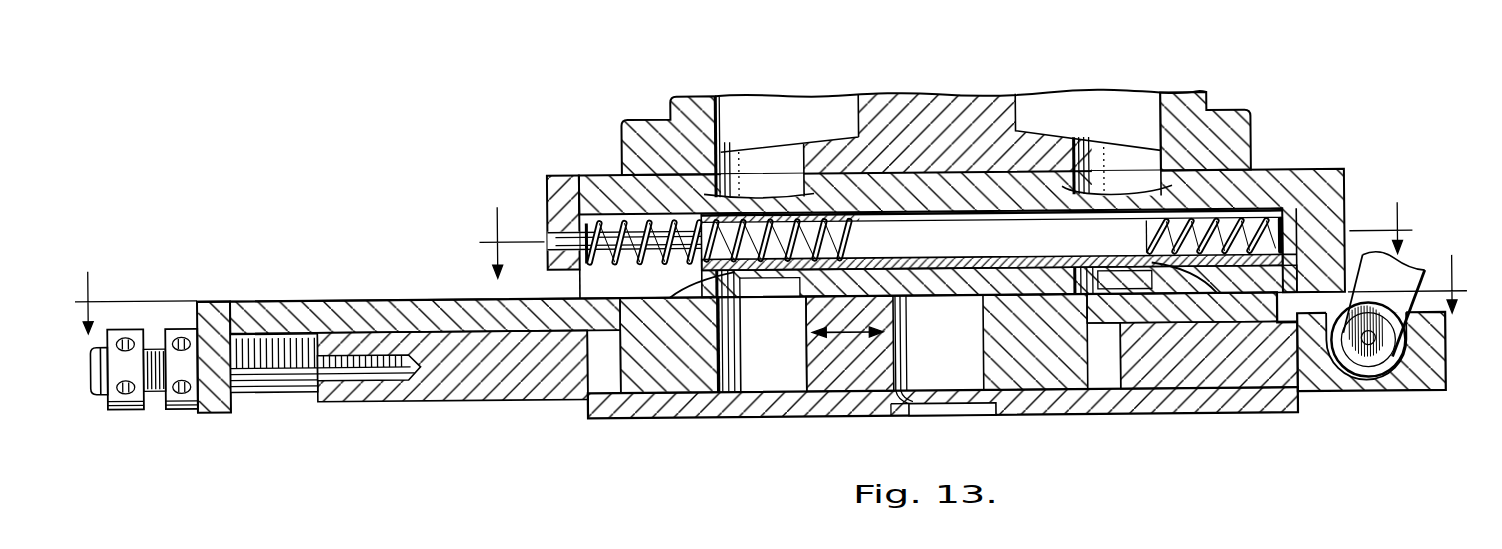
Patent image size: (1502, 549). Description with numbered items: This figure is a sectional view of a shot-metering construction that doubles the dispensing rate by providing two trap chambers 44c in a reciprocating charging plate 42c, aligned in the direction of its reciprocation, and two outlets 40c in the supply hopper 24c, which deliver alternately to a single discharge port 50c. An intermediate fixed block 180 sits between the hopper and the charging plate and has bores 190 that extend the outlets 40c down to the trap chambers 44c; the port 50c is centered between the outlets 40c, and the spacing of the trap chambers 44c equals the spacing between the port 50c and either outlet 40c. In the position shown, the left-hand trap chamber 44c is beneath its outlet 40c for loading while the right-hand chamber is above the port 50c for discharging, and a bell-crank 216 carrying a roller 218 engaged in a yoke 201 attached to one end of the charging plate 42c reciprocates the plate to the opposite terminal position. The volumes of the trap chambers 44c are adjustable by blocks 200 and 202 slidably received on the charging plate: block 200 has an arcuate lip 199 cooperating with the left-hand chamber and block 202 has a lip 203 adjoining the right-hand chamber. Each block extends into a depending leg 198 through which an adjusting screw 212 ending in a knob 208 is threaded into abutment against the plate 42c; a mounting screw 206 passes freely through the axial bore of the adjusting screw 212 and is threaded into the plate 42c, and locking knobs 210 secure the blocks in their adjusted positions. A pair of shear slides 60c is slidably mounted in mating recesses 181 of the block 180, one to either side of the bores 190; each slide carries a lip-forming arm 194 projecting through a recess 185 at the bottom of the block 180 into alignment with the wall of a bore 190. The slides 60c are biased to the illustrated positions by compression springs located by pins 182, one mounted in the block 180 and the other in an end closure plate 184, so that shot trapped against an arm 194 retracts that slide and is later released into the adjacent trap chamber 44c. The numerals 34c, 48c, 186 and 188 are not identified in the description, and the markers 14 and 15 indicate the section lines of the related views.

The supply hopper 24c is at (672, 116).
The hopper outlet 40c is at (801, 143).
The bore 190 is at (728, 182).
The body 34c is at (1080, 127).
The shear slide 60c is at (1248, 216).
The intermediate fixed block 180 is at (1332, 172).
The mating recess 181 is at (1290, 222).
The end closure plate 184 is at (548, 187).
The section line 14- 14 is at (945, 235).
The pin 182 is at (548, 248).
The spring 186 is at (718, 258).
The rail 188 is at (856, 222).
The recess 185 is at (966, 288).
The lip-forming arm 194 is at (794, 291).
The bell-crank 216 is at (1407, 293).
The section line 15- 15 is at (777, 292).
The block 200 is at (362, 297).
The charging plate 42c is at (877, 317).
The trap chamber 44c is at (803, 344).
The arcuate lip 199 is at (723, 371).
The roller 218 is at (1396, 395).
The yoke 201 is at (1425, 398).
The bottom plate 48c is at (1220, 421).
The block 202 is at (1062, 396).
The lip 203 is at (985, 381).
The discharge port 50c is at (917, 418).
The mounting screw 206 is at (100, 392).
The knob 208 is at (131, 405).
The locking knob 210 is at (180, 408).
The depending leg 198 is at (233, 409).
The adjusting screw 212 is at (292, 391).